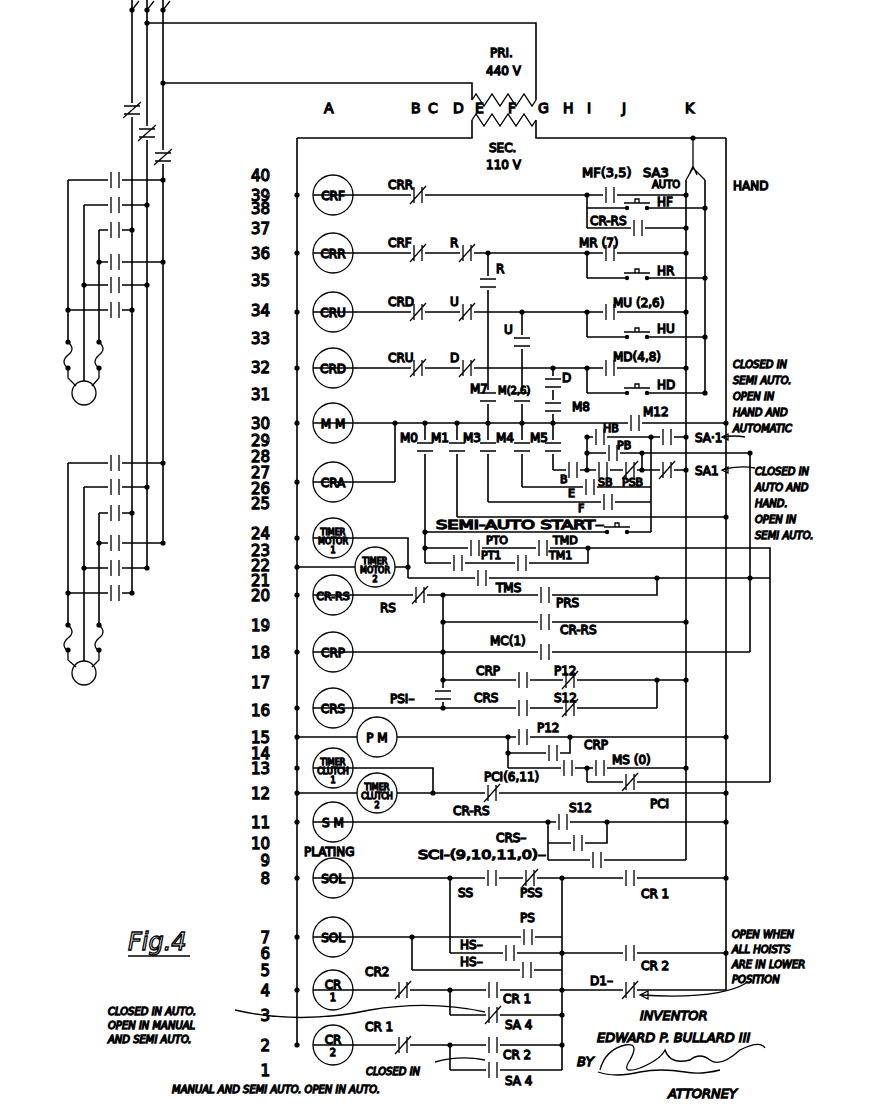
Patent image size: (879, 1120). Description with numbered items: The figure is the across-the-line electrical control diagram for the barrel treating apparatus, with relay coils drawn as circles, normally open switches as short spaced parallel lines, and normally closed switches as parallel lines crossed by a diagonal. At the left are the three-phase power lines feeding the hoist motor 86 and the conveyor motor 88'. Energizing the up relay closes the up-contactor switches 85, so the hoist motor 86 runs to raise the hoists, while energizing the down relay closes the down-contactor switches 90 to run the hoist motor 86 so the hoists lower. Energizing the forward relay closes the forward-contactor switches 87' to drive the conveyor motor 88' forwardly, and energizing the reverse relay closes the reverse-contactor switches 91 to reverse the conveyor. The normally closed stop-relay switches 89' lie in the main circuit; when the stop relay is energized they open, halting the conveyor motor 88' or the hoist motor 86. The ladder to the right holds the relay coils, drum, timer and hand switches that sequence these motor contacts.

The CRU switches 85 is at (106, 228).
The hoist motor 86 is at (72, 396).
The CRF switches 87' is at (117, 472).
The conveyor motor 88' is at (76, 661).
The CRA switches 89' is at (128, 117).
The CRD switches 90 is at (124, 314).
The CRR switches 91 is at (124, 596).